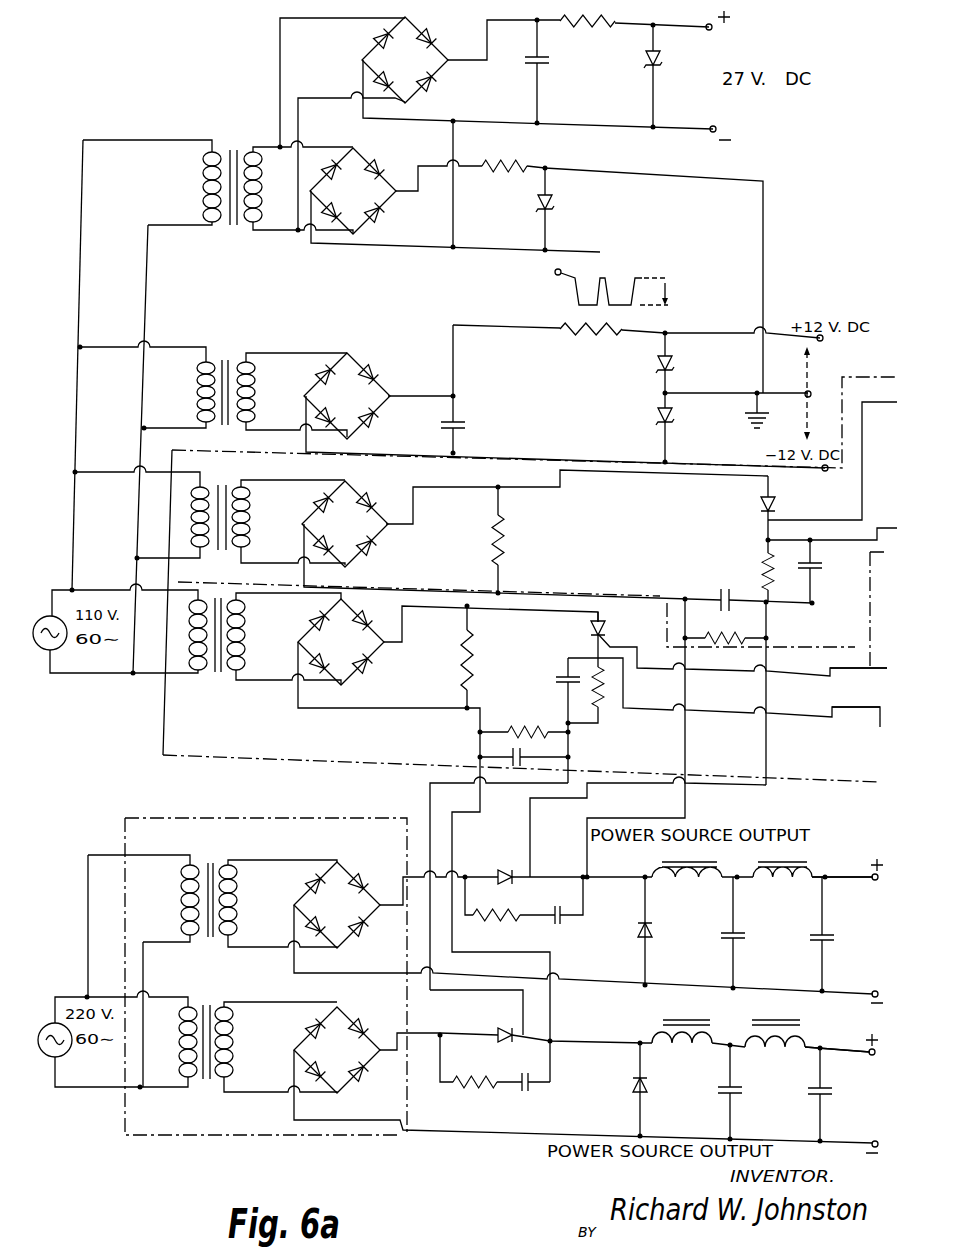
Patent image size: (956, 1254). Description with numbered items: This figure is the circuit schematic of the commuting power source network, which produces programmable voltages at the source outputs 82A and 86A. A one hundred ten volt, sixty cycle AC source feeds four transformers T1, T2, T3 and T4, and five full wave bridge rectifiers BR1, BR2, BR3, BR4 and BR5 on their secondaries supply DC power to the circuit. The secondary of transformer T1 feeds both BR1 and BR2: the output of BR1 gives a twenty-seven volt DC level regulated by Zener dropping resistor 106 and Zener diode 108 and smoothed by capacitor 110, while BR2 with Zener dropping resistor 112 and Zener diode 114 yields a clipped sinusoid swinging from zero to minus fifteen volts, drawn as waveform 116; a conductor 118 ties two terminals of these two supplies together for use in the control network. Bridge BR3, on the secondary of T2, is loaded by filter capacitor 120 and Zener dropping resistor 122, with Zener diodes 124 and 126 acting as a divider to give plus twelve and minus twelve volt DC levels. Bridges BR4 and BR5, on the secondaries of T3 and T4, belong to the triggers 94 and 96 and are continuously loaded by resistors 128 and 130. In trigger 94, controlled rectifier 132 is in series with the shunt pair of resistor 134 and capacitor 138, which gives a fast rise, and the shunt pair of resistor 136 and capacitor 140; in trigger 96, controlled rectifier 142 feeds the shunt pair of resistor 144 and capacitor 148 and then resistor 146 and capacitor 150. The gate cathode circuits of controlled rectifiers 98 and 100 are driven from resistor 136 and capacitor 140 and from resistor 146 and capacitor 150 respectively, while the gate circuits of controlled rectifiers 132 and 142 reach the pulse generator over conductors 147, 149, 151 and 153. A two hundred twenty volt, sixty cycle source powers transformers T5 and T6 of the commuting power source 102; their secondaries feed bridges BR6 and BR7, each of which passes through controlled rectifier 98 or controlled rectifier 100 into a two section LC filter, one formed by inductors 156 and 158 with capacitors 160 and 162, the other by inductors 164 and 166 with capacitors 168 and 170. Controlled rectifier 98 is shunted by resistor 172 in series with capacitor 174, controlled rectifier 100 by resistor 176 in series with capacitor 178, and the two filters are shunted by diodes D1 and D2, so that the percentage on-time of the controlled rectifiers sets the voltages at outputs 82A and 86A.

The source output 82A is at (857, 900).
The source output 86A is at (853, 1112).
The trigger 94 is at (170, 500).
The trigger 96 is at (163, 706).
The controlled rectifier 98 is at (496, 877).
The controlled rectifier 100 is at (503, 1034).
The source for providing commuting power 102 is at (360, 1148).
The Zener dropping resistor 106 is at (598, 26).
The Zener diode 108 is at (656, 78).
The capacitor 110 is at (544, 64).
The Zener dropping resistor 112 is at (505, 162).
The Zener diode 114 is at (540, 210).
The waveform 116 is at (575, 282).
The conductor 118 is at (455, 228).
The filter capacitor 120 is at (462, 412).
The Zener dropping resistor 122 is at (596, 338).
The Zener diode 124 is at (658, 370).
The Zener diode 126 is at (670, 424).
The resistor 128 is at (510, 545).
The resistor 130 is at (470, 650).
The controlled rectifier 132 is at (760, 505).
The resistor 134 is at (762, 567).
The resistor 136 is at (704, 642).
The capacitor 138 is at (815, 572).
The capacitor 140 is at (720, 600).
The controlled rectifier 142 is at (604, 626).
The resistor 144 is at (600, 712).
The resistor 146 is at (526, 732).
The conductor 147 is at (892, 400).
The capacitor 148 is at (564, 670).
The conductor 149 is at (882, 528).
The capacitor 150 is at (516, 768).
The conductor 151 is at (878, 668).
The conductor 153 is at (880, 727).
The inductor 156 is at (676, 898).
The inductor 158 is at (768, 898).
The capacitor 160 is at (728, 940).
The capacitor 162 is at (818, 942).
The inductor 164 is at (668, 1056).
The inductor 166 is at (760, 1056).
The capacitor 168 is at (726, 1096).
The capacitor 170 is at (814, 1096).
The resistor 172 is at (505, 925).
The capacitor 174 is at (556, 925).
The resistor 176 is at (476, 1092).
The capacitor 178 is at (523, 1094).
The transformer T1 is at (218, 176).
The transformer T2 is at (213, 381).
The transformer T3 is at (210, 507).
The transformer T4 is at (265, 657).
The transformer T5 is at (259, 889).
The transformer T6 is at (258, 1031).
The full wave bridge rectifier BR1 is at (425, 50).
The full wave bridge rectifier BR2 is at (388, 178).
The full wave bridge rectifier BR3 is at (380, 386).
The full wave bridge rectifier BR4 is at (360, 555).
The full wave bridge rectifier BR5 is at (358, 672).
The full wave bridge rectifier network BR6 is at (370, 893).
The full wave bridge rectifier network BR7 is at (366, 1038).
The diode D1 is at (642, 932).
The diode D2 is at (636, 1090).